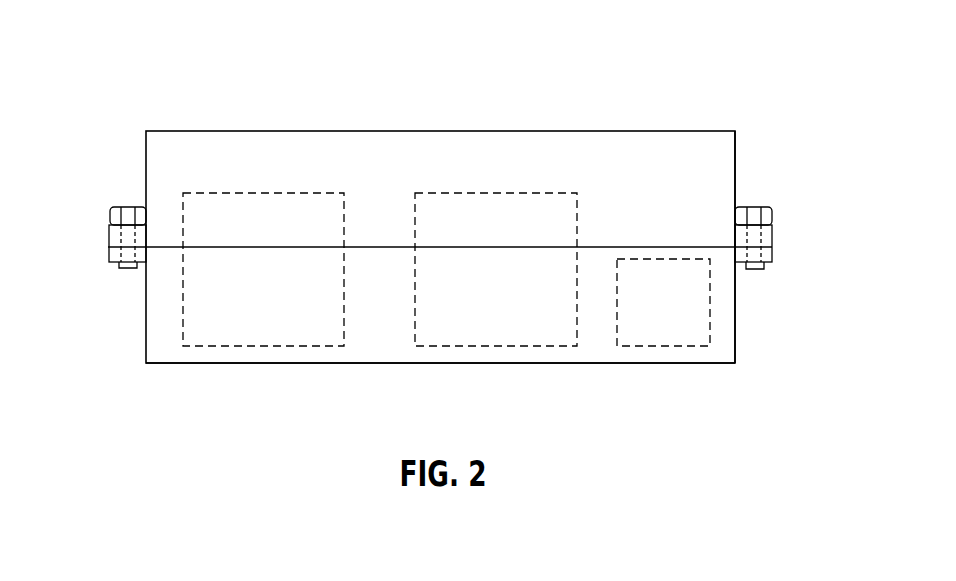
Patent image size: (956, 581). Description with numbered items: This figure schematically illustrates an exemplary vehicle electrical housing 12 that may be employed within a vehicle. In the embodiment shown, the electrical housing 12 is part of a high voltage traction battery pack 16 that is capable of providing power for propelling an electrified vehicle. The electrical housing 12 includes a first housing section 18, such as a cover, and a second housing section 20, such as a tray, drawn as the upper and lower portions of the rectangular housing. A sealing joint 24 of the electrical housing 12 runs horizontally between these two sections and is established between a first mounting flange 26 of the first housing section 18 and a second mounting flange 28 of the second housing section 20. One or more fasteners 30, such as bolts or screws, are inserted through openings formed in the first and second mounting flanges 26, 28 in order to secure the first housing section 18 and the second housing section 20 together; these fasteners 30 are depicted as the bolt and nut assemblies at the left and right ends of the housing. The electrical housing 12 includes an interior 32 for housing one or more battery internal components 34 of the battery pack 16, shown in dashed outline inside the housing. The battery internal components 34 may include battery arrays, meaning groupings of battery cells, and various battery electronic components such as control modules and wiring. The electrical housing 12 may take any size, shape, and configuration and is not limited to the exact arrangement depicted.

The high voltage traction battery pack 16 is at (754, 51).
The electrical housing 12 is at (740, 139).
The first housing section 18 is at (737, 178).
The second housing section 20 is at (737, 330).
The sealing joint 24 is at (108, 240).
The first mounting flange 26 is at (108, 226).
The second mounting flange 28 is at (108, 258).
The fastener 30 is at (128, 207).
The interior 32 is at (365, 178).
The battery internal component 34 is at (270, 347).